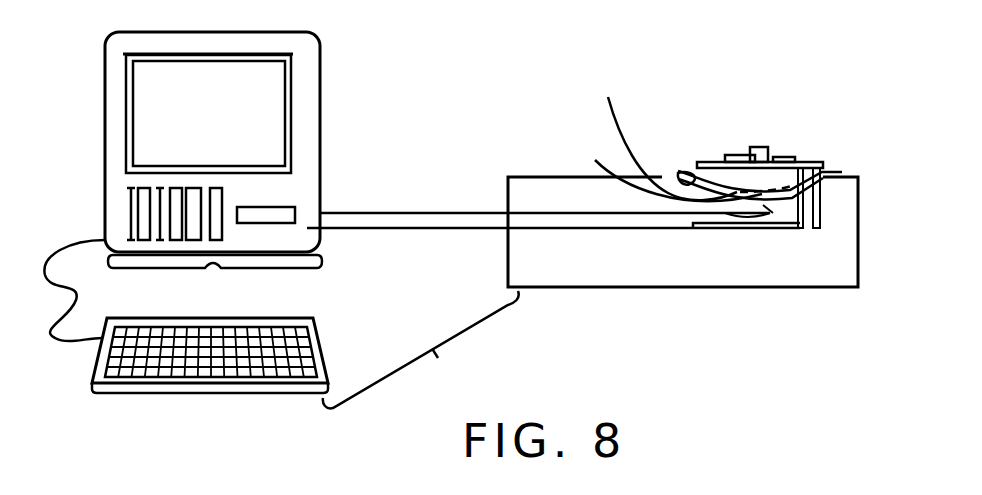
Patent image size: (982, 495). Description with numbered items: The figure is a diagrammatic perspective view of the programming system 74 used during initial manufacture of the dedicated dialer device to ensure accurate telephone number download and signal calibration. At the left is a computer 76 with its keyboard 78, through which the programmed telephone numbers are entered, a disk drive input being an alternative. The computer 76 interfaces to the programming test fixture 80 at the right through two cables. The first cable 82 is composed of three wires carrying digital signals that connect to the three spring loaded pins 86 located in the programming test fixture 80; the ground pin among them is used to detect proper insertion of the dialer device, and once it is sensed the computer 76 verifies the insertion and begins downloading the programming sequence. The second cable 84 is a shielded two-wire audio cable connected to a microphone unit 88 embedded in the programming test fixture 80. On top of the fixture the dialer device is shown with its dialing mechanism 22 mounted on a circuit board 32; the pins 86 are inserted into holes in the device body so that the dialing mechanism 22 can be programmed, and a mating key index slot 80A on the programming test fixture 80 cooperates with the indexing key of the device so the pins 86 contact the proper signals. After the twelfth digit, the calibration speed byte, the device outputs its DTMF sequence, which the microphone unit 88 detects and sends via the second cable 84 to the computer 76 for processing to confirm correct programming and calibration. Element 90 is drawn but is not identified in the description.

The automatic telephone number dialing mechanism 22 is at (776, 139).
The circuit board 32 is at (705, 160).
The programming system 74 is at (445, 358).
The computer 76 is at (320, 114).
The keyboard 78 is at (313, 342).
The programming test fixture 80 is at (700, 288).
The mating key index slot 80A is at (714, 135).
The first cable 82 is at (420, 228).
The second cable 84 is at (390, 213).
The spring loaded pins 86 is at (822, 205).
The microphone unit 88 is at (662, 171).
The hook 90 is at (678, 173).